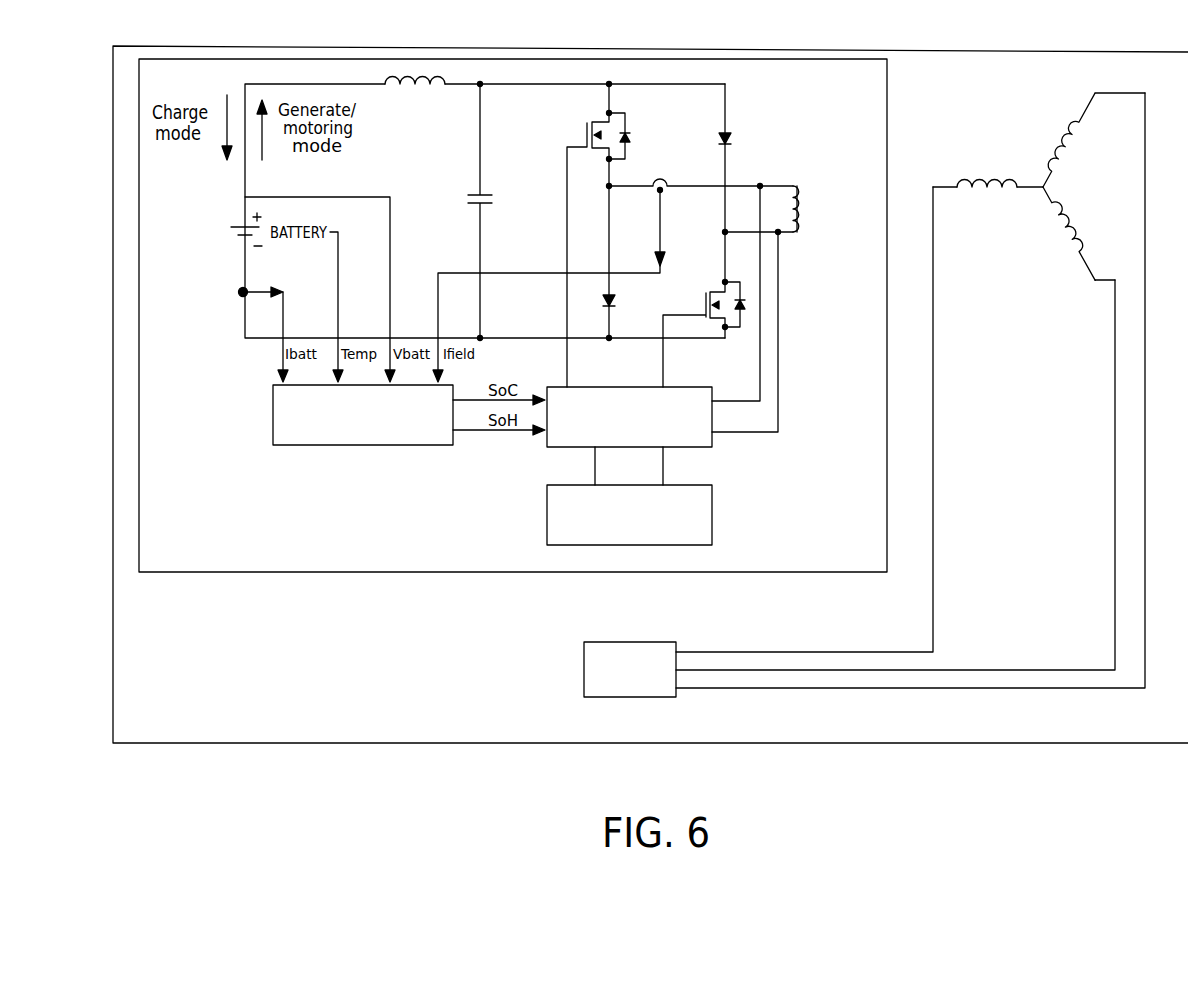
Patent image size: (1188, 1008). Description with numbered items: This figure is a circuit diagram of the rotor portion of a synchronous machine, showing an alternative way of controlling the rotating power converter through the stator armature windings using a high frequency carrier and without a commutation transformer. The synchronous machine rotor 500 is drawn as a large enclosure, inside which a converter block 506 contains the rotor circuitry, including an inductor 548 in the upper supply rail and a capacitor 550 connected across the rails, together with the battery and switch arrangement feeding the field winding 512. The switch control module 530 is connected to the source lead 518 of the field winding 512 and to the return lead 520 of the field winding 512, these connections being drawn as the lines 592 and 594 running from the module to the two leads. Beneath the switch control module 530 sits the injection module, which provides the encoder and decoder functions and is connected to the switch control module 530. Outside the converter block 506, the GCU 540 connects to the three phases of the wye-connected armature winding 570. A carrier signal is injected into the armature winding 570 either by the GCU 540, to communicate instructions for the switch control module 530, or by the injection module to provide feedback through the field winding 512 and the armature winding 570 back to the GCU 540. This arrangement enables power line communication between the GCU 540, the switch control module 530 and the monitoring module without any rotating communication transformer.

The synchronous machine rotor 500 is at (190, 774).
The converter circuit 506 is at (876, 94).
The field winding 512 is at (799, 217).
The source lead 518 is at (780, 183).
The return lead 520 is at (796, 234).
The switch control module 530 is at (562, 450).
The GCU 540 is at (583, 673).
The inductor 548 is at (404, 99).
The capacitor 550 is at (497, 182).
The armature winding 570 is at (1078, 136).
The switch control line 592 is at (758, 360).
The switch control line 594 is at (758, 434).